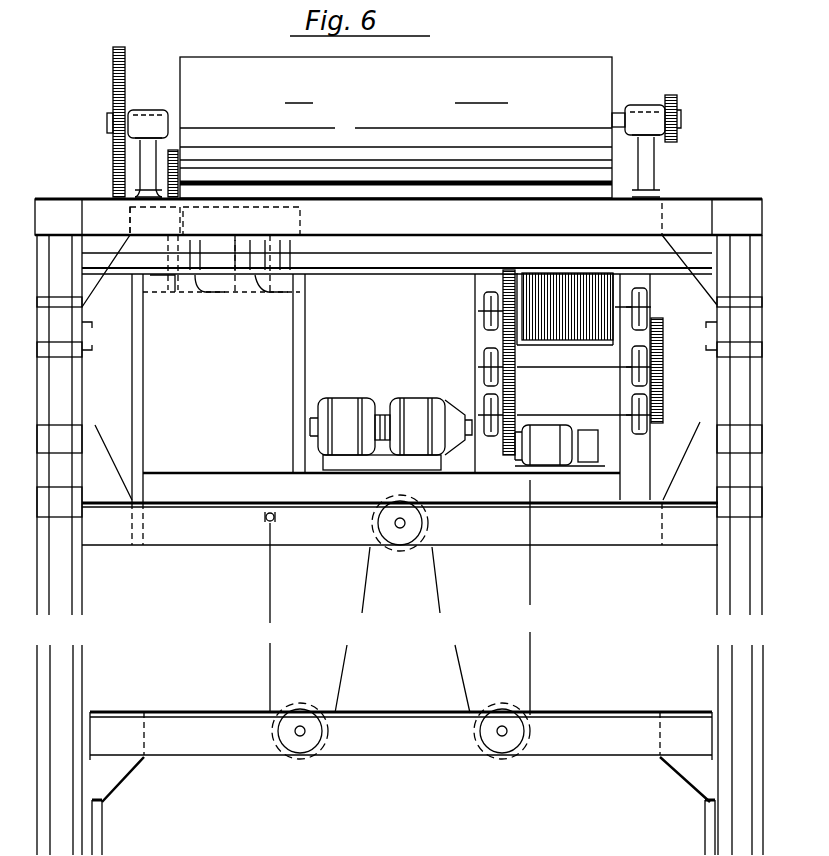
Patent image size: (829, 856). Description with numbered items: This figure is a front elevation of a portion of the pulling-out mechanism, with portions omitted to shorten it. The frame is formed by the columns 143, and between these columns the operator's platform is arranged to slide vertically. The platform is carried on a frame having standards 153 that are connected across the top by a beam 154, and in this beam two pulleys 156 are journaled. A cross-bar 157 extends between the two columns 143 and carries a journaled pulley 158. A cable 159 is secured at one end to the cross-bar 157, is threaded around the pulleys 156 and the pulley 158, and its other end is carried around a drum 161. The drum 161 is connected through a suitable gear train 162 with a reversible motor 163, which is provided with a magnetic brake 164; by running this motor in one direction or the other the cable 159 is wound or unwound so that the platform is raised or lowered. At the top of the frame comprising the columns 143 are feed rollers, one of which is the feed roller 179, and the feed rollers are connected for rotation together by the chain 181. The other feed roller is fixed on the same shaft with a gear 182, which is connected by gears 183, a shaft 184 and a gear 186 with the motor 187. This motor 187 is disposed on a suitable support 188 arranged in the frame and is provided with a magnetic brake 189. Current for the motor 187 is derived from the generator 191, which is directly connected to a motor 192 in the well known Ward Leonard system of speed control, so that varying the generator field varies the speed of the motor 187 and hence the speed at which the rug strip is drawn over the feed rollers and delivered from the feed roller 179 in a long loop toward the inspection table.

The columns 143 is at (82, 584).
The standards 153 is at (102, 820).
The beam 154 is at (392, 745).
The pulleys 156 is at (318, 700).
The cross-bar 157 is at (236, 546).
The pulley 158 is at (416, 548).
The cable 159 is at (275, 604).
The drum 161 is at (612, 340).
The gear train 162 is at (483, 335).
The reversible motor 163 is at (562, 447).
The magnetic brake 164 is at (598, 468).
The feed roller 179 is at (418, 87).
The chain 181 is at (672, 98).
The gear 182 is at (112, 79).
The gears 183 is at (128, 215).
The shaft 184 is at (206, 212).
The gear 186 is at (179, 154).
The motor 187 is at (236, 300).
The support 188 is at (190, 302).
The magnetic brake 189 is at (286, 300).
The generator 191 is at (456, 437).
The motor 192 is at (360, 437).